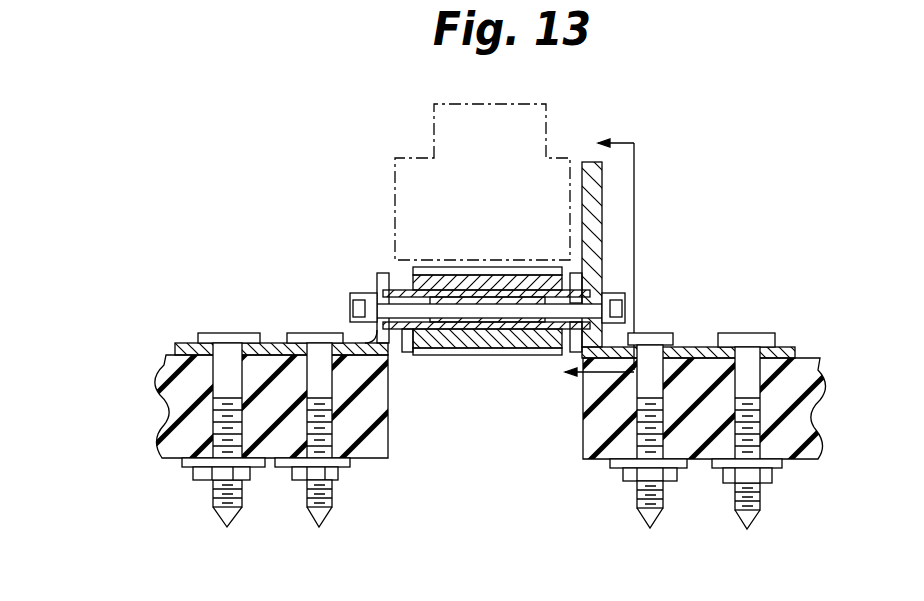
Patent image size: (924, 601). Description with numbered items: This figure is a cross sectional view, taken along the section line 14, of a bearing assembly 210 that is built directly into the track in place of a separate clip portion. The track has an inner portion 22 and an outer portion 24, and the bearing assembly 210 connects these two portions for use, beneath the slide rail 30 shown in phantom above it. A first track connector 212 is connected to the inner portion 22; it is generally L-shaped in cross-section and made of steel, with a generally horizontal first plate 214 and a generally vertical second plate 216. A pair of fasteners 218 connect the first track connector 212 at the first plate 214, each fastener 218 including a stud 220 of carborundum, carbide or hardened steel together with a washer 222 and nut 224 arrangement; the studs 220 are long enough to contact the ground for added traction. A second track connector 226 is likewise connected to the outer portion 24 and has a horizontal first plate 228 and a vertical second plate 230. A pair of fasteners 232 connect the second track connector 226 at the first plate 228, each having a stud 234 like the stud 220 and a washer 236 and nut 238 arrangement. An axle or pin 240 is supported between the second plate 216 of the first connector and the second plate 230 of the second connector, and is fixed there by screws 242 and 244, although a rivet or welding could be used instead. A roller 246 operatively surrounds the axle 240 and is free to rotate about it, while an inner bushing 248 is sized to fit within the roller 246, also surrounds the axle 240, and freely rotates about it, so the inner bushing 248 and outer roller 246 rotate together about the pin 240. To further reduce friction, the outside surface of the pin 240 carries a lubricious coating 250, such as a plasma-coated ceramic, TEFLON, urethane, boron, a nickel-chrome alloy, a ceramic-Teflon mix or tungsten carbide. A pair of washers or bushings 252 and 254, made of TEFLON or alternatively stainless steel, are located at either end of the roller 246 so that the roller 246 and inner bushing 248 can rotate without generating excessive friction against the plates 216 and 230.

The slide rail 30 is at (458, 128).
The section line 14 is at (583, 257).
The bearing assembly 210 is at (258, 237).
The first track connector 212 is at (191, 531).
The first plate 214 is at (172, 345).
The second plate 216 is at (377, 273).
The fastener 218 is at (230, 306).
The inner portion of the track 22 is at (172, 402).
The stud 220 is at (242, 512).
The washer 222 is at (175, 462).
The nut 224 is at (193, 478).
The second track connector 226 is at (794, 516).
The first plate 228 is at (795, 348).
The second plate 230 is at (602, 193).
The fastener 232 is at (742, 320).
The stud 234 is at (733, 520).
The washer 236 is at (782, 467).
The nut 238 is at (723, 480).
The outer portion of the track 24 is at (808, 440).
The axle or pin 240 is at (470, 316).
The screw 242 is at (356, 293).
The screw 244 is at (625, 300).
The roller 246 is at (510, 352).
The inner bushing 248 is at (530, 354).
The coating 250 is at (407, 271).
The washer or bushing 252 is at (403, 350).
The washer or bushing 254 is at (566, 279).